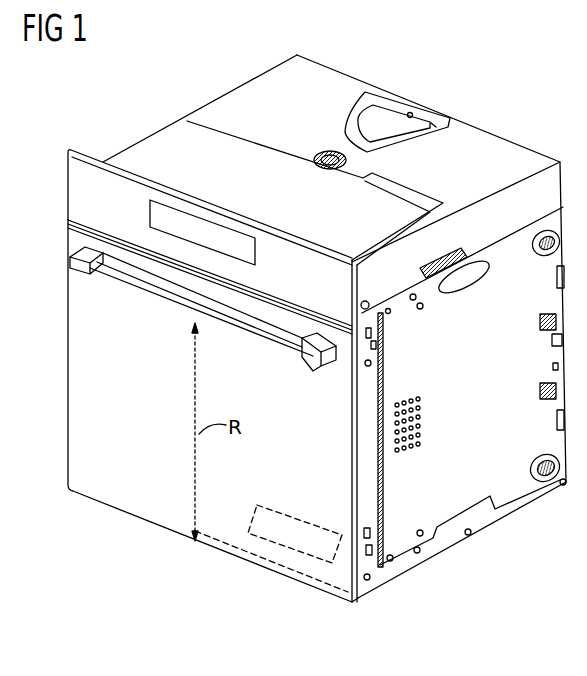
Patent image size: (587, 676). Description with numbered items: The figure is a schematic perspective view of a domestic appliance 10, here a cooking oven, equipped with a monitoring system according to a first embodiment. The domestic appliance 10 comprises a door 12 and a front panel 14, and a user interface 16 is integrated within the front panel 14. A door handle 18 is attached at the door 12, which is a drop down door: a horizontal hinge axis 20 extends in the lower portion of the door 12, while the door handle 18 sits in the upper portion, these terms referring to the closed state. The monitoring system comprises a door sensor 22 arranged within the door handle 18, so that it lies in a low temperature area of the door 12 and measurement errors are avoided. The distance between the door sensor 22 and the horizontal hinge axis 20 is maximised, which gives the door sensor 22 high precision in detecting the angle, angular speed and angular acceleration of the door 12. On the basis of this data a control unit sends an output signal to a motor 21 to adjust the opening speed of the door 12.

The domestic appliance 10 is at (486, 68).
The door 12 is at (95, 488).
The front panel 14 is at (78, 171).
The user interface 16 is at (150, 212).
The door handle 18 is at (97, 276).
The horizontal hinge axis 20 is at (260, 556).
The motor 21 is at (292, 550).
The door sensor 22 is at (178, 311).